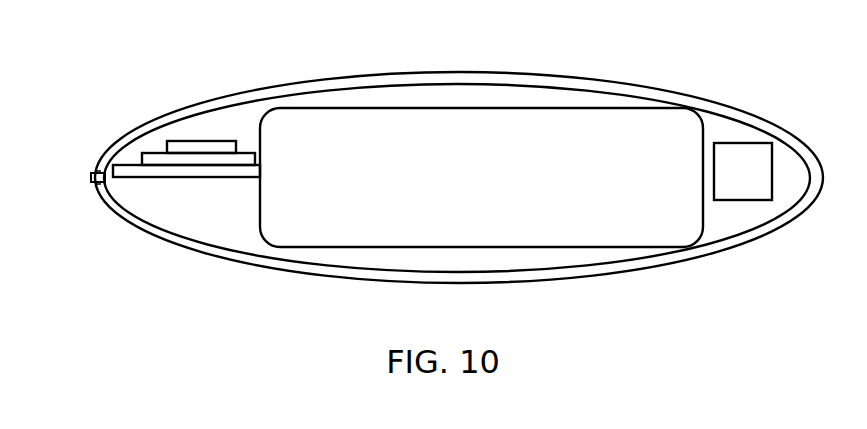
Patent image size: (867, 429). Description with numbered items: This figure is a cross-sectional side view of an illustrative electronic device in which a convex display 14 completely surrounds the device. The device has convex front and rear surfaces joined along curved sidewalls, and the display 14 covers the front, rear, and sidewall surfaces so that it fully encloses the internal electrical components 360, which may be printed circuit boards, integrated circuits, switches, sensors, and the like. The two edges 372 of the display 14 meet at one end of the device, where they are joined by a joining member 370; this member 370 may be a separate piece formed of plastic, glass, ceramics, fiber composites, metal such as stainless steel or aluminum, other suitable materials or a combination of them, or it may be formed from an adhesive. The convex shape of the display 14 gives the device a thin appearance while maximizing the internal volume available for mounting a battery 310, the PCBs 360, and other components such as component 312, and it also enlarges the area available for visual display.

The display 14 is at (595, 84).
The battery 310 is at (347, 125).
The component 312 is at (748, 148).
The electrical components 360 is at (205, 147).
The joining member 370 is at (91, 177).
The edges 372 is at (97, 172).